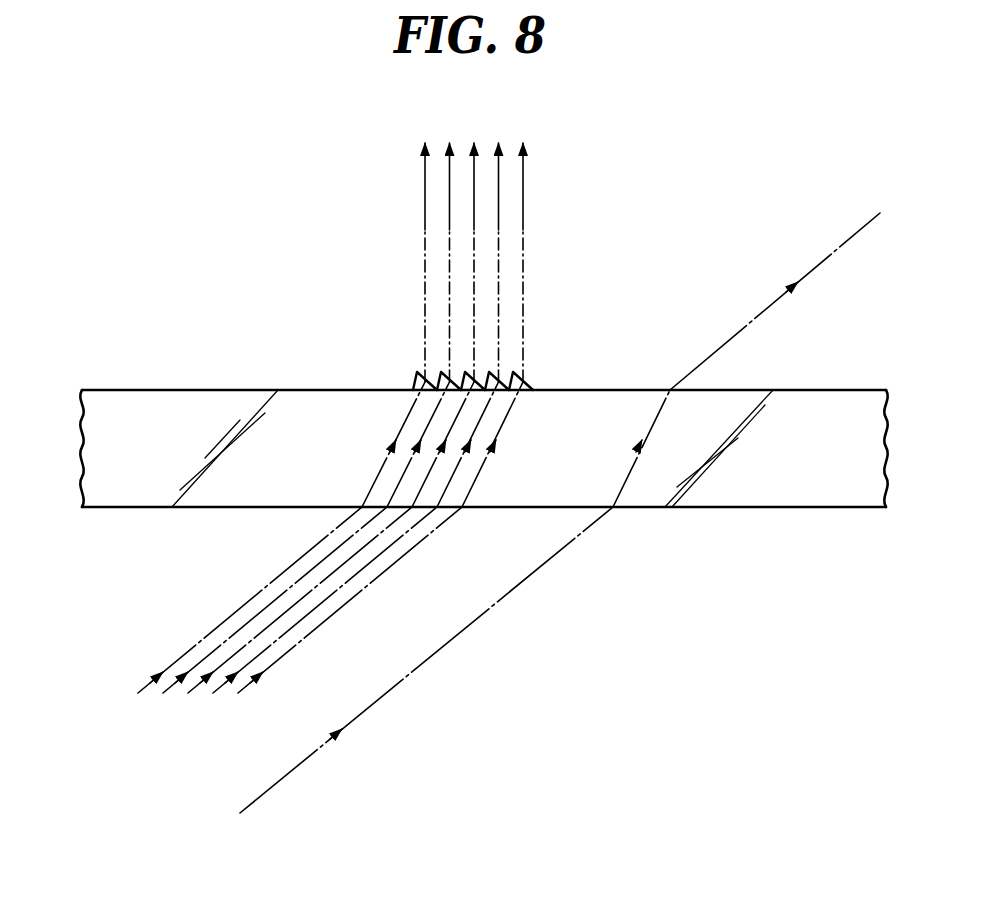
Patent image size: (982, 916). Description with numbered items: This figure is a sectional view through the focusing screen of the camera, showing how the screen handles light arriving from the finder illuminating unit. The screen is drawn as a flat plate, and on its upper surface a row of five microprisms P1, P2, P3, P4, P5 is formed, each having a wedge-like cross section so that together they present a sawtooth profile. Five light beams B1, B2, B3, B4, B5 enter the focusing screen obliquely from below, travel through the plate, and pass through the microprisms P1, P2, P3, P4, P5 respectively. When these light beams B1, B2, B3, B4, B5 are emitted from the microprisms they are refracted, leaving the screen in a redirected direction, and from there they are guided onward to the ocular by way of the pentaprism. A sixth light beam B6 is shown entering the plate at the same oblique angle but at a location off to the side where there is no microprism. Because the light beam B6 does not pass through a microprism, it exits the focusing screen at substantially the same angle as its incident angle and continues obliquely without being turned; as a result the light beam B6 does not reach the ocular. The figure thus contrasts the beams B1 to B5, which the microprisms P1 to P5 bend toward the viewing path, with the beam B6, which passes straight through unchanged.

The microprism P1 is at (416, 379).
The microprism P2 is at (441, 377).
The microprism P3 is at (466, 377).
The microprism P4 is at (490, 377).
The microprism P5 is at (523, 378).
The light beam B1 is at (150, 686).
The light beam B2 is at (165, 690).
The light beam B3 is at (190, 690).
The light beam B4 is at (222, 693).
The light beam B5 is at (248, 693).
The light beam B6 is at (287, 773).